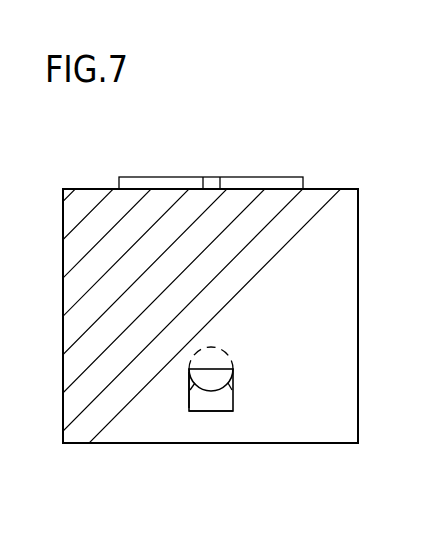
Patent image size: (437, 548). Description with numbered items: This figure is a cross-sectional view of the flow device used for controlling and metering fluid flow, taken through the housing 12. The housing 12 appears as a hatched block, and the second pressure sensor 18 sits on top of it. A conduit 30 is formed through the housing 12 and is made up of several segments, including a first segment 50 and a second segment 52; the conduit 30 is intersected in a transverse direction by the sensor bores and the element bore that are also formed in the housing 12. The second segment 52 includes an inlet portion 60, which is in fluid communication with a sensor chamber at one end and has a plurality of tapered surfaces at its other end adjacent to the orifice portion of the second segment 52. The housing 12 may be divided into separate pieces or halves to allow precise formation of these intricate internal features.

The housing 12 is at (329, 176).
The second pressure sensor 18 is at (248, 175).
The conduit 30 is at (218, 375).
The first segment 50 is at (179, 393).
The second segment 52 is at (247, 413).
The inlet portion 60 is at (200, 411).